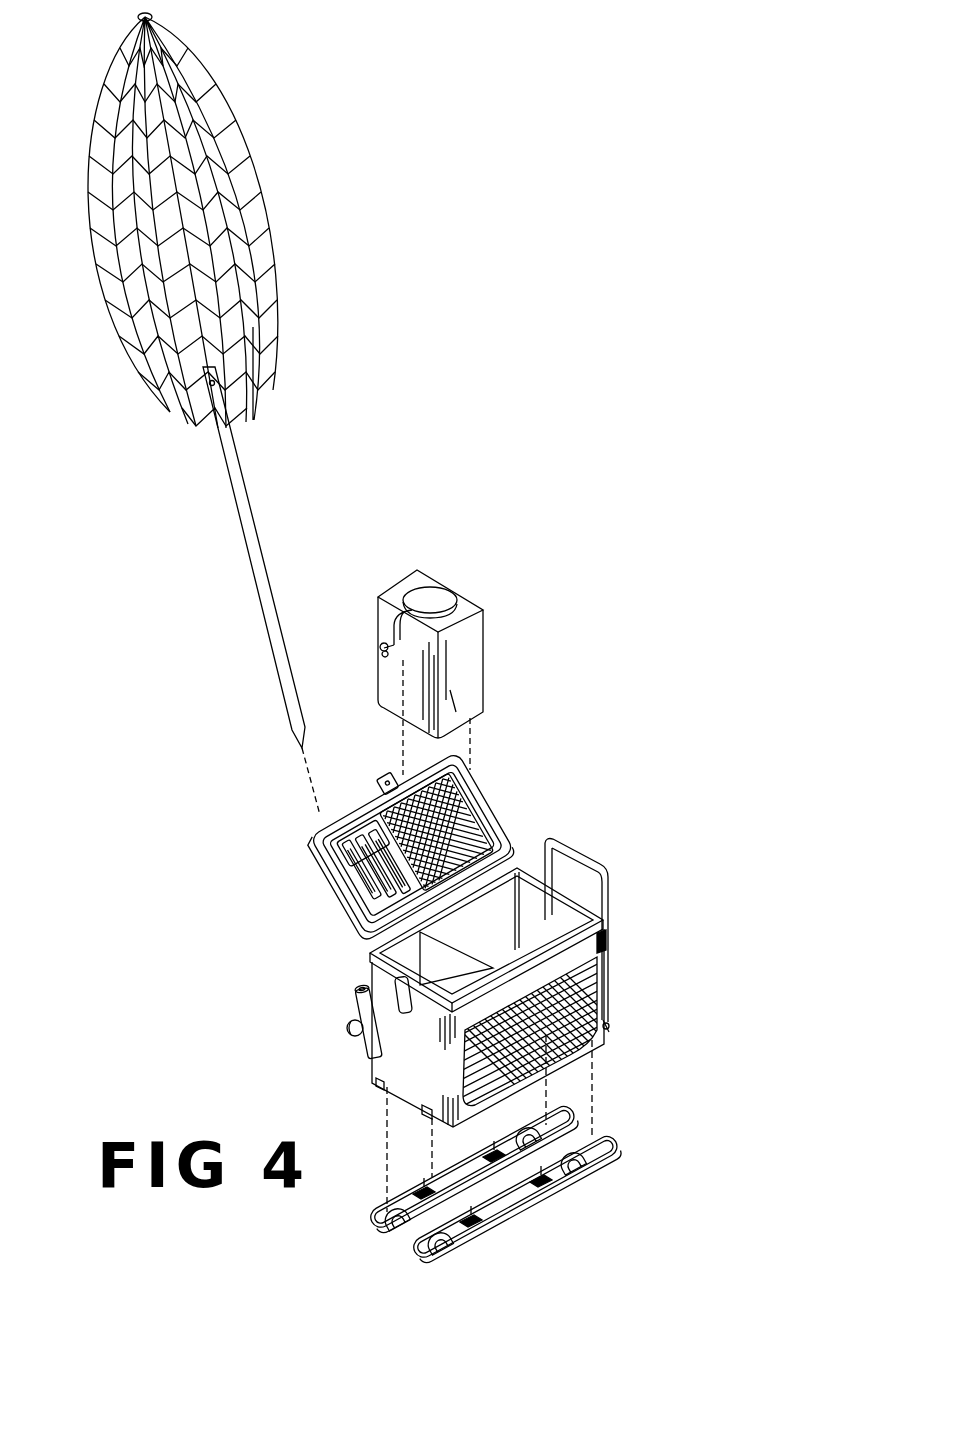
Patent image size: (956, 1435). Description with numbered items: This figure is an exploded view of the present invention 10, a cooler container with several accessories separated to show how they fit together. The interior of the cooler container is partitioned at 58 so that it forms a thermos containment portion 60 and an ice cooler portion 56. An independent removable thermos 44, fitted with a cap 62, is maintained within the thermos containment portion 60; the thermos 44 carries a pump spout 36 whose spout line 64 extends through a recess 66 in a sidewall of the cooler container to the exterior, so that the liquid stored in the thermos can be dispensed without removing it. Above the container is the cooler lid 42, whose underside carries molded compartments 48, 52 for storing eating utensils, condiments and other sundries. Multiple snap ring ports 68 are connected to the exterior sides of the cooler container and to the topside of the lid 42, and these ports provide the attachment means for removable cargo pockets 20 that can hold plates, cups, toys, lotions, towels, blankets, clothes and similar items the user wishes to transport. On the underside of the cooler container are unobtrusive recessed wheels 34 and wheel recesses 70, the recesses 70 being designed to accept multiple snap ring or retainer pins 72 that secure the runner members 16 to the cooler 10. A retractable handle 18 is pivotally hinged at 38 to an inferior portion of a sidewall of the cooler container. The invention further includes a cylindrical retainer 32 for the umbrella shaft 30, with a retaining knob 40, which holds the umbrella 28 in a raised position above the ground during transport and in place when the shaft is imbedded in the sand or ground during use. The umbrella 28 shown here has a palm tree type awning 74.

The present invention 10 is at (240, 790).
The runner members 16 is at (615, 1145).
The retractable handle 18 is at (578, 858).
The removable cargo pockets 20 is at (600, 1000).
The umbrella 28 is at (270, 230).
The umbrella shaft 30 is at (242, 492).
The umbrella shaft retainer 32 is at (355, 1013).
The recessed wheels 34 is at (432, 1262).
The pump spout 36 is at (378, 640).
The hinge 38 is at (610, 1027).
The retaining knob 40 is at (347, 1036).
The cooler lid 42 is at (425, 840).
The removable thermos 44 is at (453, 642).
The molded compartment 48 is at (382, 841).
The molded compartment 52 is at (436, 832).
The ice cooler portion 56 is at (562, 927).
The partition 58 is at (477, 962).
The thermos containment portion 60 is at (457, 981).
The cap 62 is at (437, 593).
The spout line 64 is at (460, 710).
The recess 66 is at (400, 980).
The snap ring ports 68 is at (608, 936).
The wheel recesses 70 is at (430, 1112).
The retainer pins 72 is at (542, 1188).
The palm tree type awning 74 is at (273, 385).